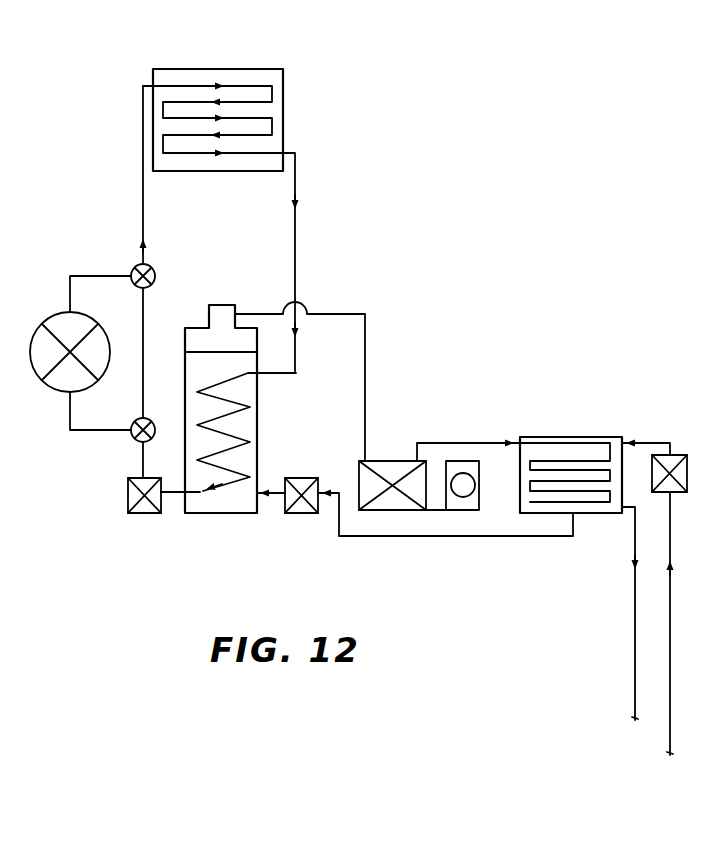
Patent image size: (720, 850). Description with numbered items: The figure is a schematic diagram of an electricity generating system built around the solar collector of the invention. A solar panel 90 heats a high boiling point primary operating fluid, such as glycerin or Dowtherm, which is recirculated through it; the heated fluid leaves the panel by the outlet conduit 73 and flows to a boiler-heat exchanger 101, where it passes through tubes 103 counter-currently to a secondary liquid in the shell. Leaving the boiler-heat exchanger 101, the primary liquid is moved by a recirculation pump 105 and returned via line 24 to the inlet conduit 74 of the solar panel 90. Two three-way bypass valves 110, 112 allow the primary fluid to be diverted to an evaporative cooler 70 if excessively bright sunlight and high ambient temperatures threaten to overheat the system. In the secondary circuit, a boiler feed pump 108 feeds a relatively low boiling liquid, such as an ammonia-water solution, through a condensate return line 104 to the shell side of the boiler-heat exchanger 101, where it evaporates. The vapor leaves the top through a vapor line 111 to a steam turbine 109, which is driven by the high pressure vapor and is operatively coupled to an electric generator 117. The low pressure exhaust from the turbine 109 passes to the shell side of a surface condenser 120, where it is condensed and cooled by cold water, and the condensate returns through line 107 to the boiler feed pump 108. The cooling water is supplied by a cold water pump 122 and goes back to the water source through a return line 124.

The line 24 is at (143, 207).
The evaporative cooler 70 is at (50, 390).
The outlet conduit 73 is at (301, 156).
The inlet conduit 74 is at (143, 86).
The solar panel 90 is at (232, 68).
The boiler-heat exchanger 101 is at (257, 428).
The tubes 103 is at (231, 377).
The condensate return line 104 is at (262, 490).
The recirculation pump 105 is at (128, 507).
The line 107 is at (473, 536).
The boiler feed pump 108 is at (300, 515).
The steam turbine 109 is at (383, 460).
The three-way bypass valve 110 is at (131, 442).
The vapor line 111 is at (333, 318).
The three-way bypass valve 112 is at (156, 276).
The electric generator 117 is at (480, 485).
The surface condenser 120 is at (578, 408).
The cold water pump 122 is at (687, 455).
The return line 124 is at (635, 657).